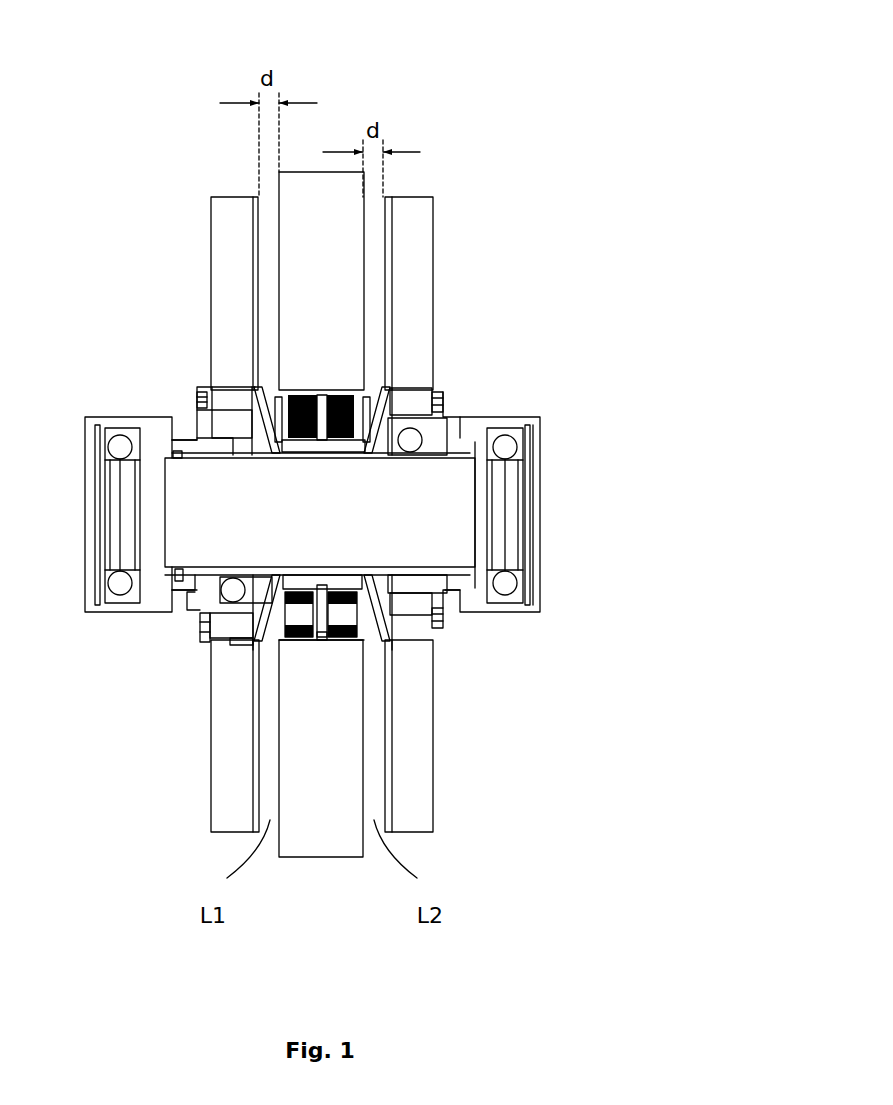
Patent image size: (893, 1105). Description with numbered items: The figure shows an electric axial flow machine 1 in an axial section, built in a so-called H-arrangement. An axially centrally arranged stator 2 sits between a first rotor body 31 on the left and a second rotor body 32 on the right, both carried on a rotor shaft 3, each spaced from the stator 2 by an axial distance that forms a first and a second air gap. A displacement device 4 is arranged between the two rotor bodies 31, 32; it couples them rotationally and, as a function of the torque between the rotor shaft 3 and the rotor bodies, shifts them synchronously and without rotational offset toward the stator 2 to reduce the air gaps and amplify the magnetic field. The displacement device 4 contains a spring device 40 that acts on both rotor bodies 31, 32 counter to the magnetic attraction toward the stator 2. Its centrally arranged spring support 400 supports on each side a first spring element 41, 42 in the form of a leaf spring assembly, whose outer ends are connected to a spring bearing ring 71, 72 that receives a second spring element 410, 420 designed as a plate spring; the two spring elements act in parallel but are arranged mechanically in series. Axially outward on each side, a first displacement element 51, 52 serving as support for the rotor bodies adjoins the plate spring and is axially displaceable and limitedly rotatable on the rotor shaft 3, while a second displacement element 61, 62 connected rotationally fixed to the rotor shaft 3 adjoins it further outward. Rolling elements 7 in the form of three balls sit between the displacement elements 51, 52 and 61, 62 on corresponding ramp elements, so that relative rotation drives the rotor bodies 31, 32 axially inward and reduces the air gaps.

The electric axial flow machine 1 is at (446, 100).
The stator 2 is at (325, 236).
The rotor shaft 3 is at (469, 432).
The displacement device 4 is at (268, 374).
The rolling elements 7 is at (232, 592).
The first rotor body 31 is at (238, 803).
The second rotor body 32 is at (418, 797).
The spring device 40 is at (360, 380).
The first spring element 41 is at (293, 632).
The first spring element 42 is at (351, 632).
The first displacement element 51 is at (233, 427).
The first displacement element 52 is at (400, 422).
The second displacement element 61 is at (207, 440).
The second displacement element 62 is at (437, 447).
The spring bearing ring 71 is at (272, 413).
The spring bearing ring 72 is at (370, 400).
The spring support 400 is at (325, 641).
The second spring element 410 is at (250, 620).
The second spring element 420 is at (398, 605).